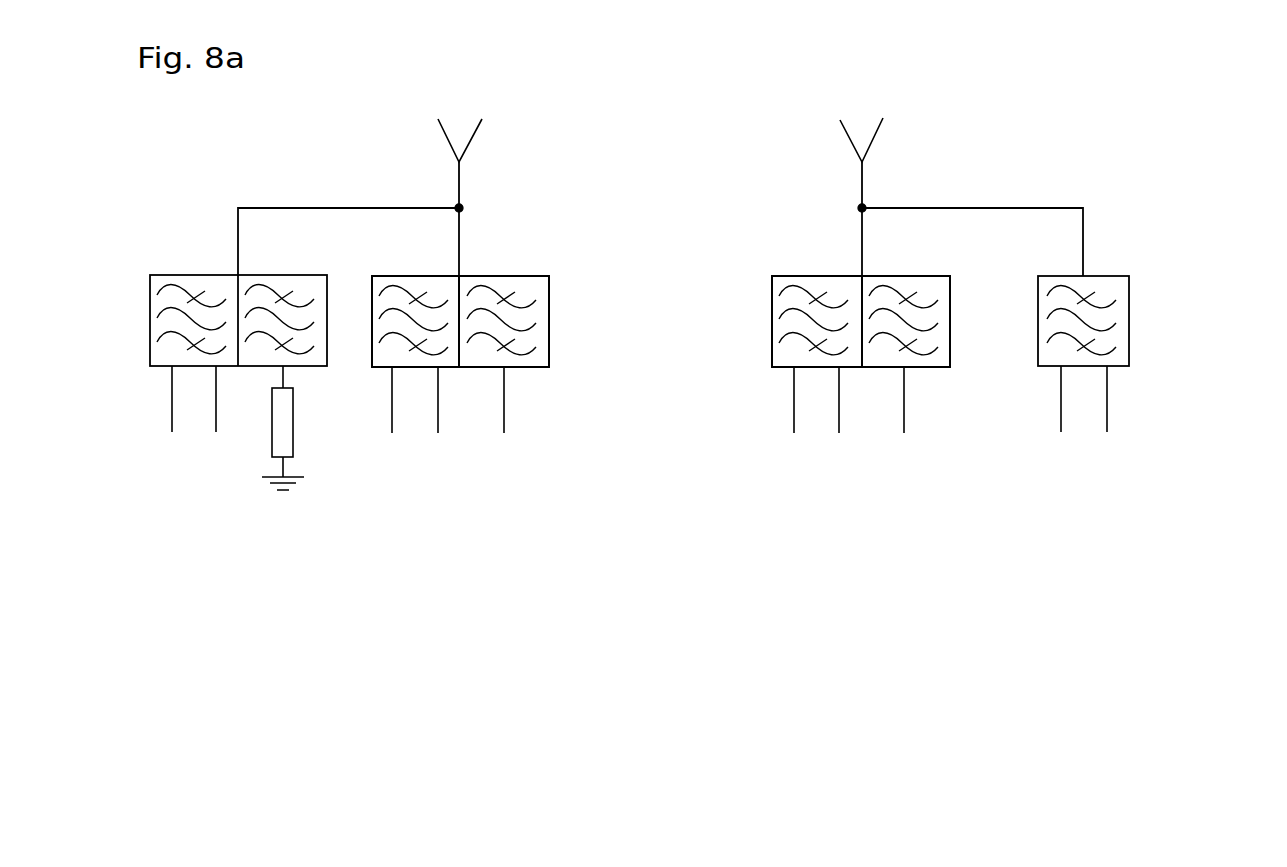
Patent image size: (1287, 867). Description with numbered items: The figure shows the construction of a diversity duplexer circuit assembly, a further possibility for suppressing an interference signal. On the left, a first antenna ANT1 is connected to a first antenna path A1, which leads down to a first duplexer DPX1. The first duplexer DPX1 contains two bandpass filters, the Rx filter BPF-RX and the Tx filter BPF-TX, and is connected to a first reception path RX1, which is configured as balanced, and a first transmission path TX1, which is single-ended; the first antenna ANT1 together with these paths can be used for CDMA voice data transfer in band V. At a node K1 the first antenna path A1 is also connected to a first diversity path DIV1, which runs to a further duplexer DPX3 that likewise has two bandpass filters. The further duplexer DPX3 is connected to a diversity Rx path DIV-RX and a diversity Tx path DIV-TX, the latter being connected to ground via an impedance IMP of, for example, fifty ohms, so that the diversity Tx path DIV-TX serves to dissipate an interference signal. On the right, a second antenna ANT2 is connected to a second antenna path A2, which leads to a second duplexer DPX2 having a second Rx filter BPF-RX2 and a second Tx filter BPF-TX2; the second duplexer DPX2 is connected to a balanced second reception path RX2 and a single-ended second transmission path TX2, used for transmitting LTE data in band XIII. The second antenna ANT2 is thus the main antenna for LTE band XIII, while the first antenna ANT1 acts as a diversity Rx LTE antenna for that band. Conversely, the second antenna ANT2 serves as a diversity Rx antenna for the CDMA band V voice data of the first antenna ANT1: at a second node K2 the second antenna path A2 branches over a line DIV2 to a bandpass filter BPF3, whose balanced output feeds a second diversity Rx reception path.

The first diversity path DIV1 is at (302, 207).
The node K1 is at (456, 206).
The first antenna ANT1 is at (478, 120).
The first antenna path A1 is at (459, 186).
The further duplexer DPX3 is at (203, 285).
The diversity Rx path DIV-RX is at (216, 403).
The diversity Tx path DIV-TX is at (290, 376).
The impedance IMP is at (284, 425).
The first duplexer DPX1 is at (542, 298).
The Rx filter BPF-RX is at (438, 280).
The Tx filter BPF-TX is at (535, 331).
The first reception path RX1 is at (393, 415).
The first transmission path TX1 is at (504, 415).
The second antenna ANT2 is at (847, 133).
The second antenna path A2 is at (862, 177).
The second node K2 is at (864, 194).
The second diversity path / divider line DIV2 is at (1028, 210).
The second duplexer DPX2 is at (875, 426).
The second Rx filter BPF-RX2 is at (782, 353).
The second Tx filter BPF-TX2 is at (938, 360).
The second reception path RX2 is at (840, 413).
The second transmission path TX2 is at (905, 393).
The bandpass filter BPF3 is at (1128, 328).